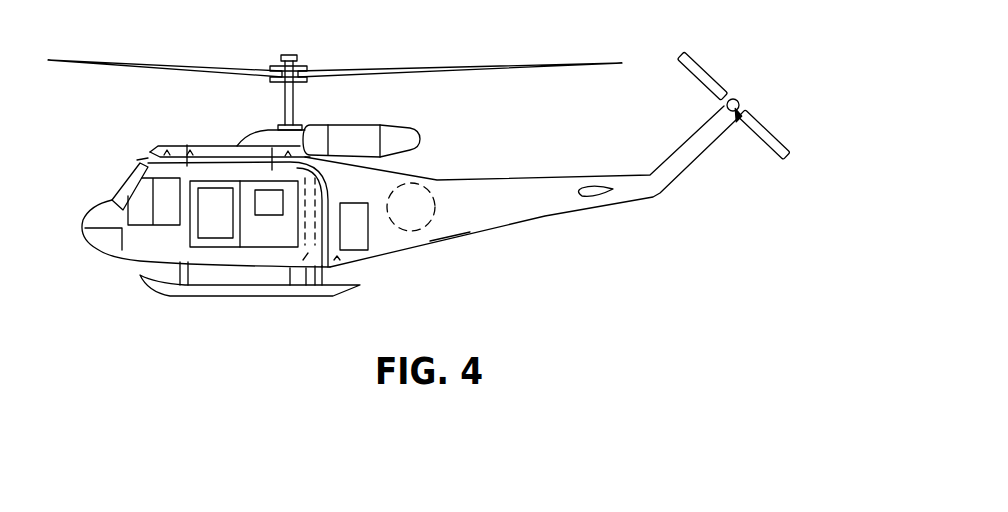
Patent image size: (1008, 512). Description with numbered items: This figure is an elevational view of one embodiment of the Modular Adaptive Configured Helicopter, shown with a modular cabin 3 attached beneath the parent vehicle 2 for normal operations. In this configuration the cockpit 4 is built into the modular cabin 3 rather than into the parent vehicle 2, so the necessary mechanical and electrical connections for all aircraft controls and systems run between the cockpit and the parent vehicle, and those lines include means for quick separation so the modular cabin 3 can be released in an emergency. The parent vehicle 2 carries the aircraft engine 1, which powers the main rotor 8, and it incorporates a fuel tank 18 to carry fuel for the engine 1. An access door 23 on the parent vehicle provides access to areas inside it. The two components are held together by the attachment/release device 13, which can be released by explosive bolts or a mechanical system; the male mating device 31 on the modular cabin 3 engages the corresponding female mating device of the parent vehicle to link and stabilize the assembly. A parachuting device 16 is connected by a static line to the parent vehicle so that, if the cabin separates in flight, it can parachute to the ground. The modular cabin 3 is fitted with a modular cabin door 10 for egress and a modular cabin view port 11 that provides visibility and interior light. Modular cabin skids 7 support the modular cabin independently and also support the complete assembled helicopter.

The aircraft engine 1 is at (395, 138).
The parent vehicle 2 is at (380, 182).
The modular cabin 3 is at (167, 245).
The cockpit 4 is at (142, 212).
The modular cabin skids 7 is at (202, 292).
The main rotor 8 is at (510, 69).
The modular cabin door 10 is at (237, 235).
The modular cabin view port 11 is at (108, 238).
The attachment/release device 13 is at (199, 147).
The parachuting device 16 is at (297, 277).
The fuel tank 18 is at (443, 242).
The access door 23 is at (357, 237).
The Male Mating Device (MMD) 31 is at (150, 158).